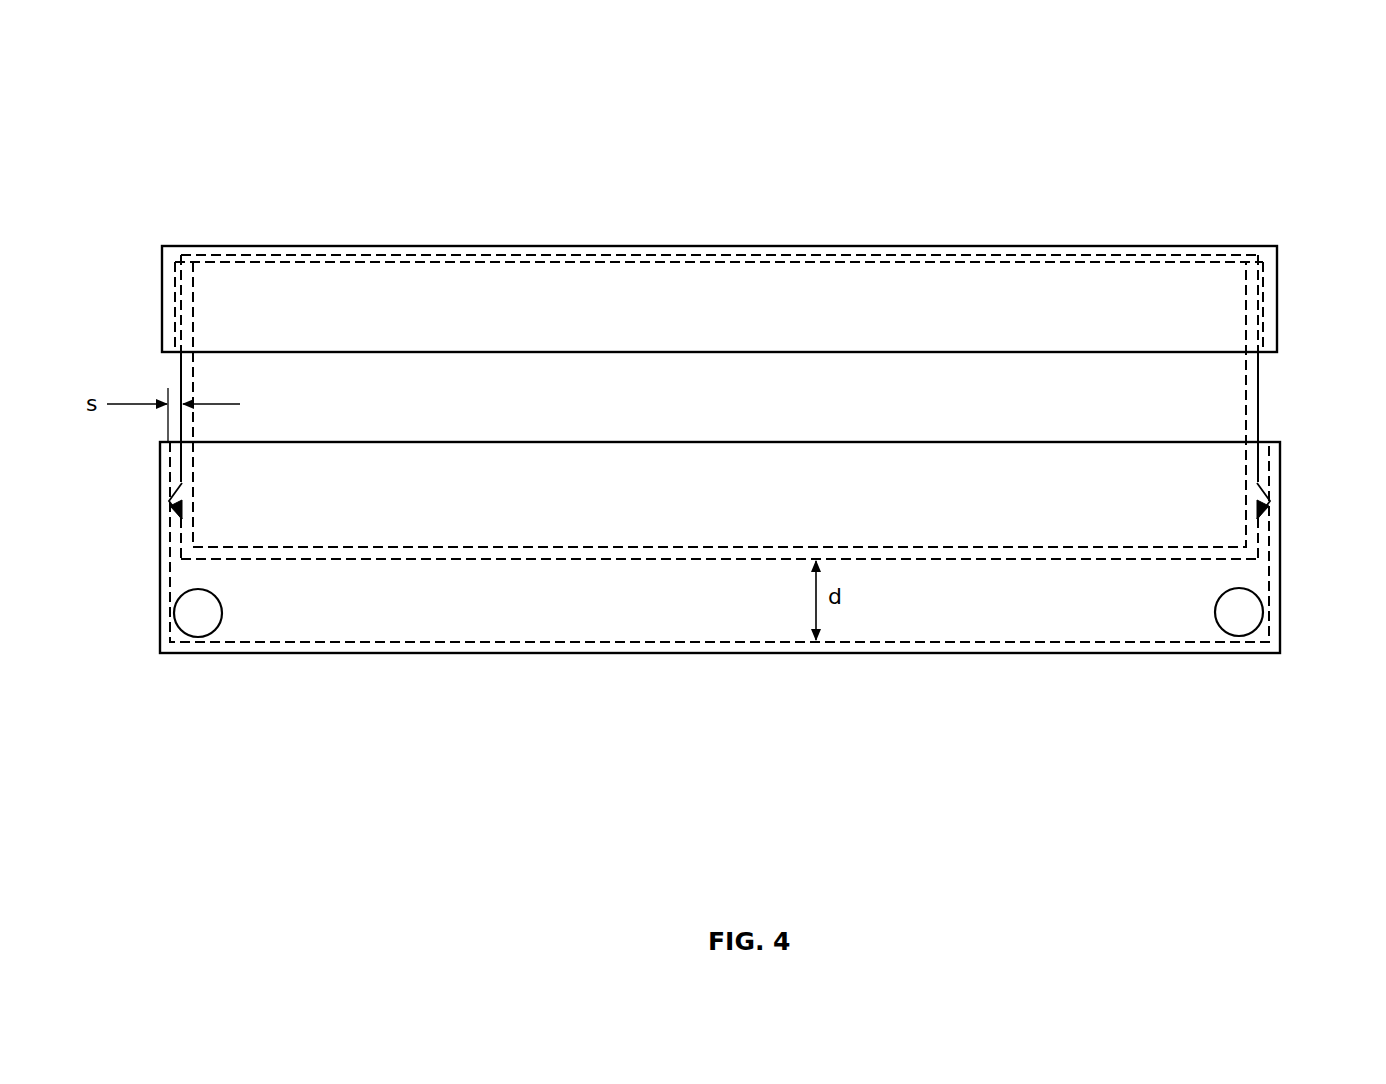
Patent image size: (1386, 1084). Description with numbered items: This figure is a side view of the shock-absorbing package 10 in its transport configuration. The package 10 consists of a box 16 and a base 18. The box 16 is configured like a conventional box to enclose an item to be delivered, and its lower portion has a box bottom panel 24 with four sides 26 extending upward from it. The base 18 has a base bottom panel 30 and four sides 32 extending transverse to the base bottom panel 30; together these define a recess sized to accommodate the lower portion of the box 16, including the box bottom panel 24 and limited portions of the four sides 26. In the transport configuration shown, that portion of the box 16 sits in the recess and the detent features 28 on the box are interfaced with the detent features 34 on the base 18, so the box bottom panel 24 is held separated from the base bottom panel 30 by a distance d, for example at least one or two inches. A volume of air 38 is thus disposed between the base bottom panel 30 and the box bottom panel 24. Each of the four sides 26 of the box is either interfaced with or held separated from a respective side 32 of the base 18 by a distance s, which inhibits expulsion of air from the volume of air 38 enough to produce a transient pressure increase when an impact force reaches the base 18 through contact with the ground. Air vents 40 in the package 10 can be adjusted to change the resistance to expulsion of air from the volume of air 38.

The shock-absorbing package 10 is at (306, 110).
The box 16 is at (1310, 319).
The base 18 is at (1280, 653).
The box bottom panel 24 is at (950, 547).
The sides 26 is at (195, 378).
The detent features 28 is at (178, 490).
The base bottom panel 30 is at (634, 640).
The sides 32 is at (163, 583).
The detent feature 34 is at (178, 506).
The volume of air 38 is at (442, 607).
The air vents 40 is at (212, 625).